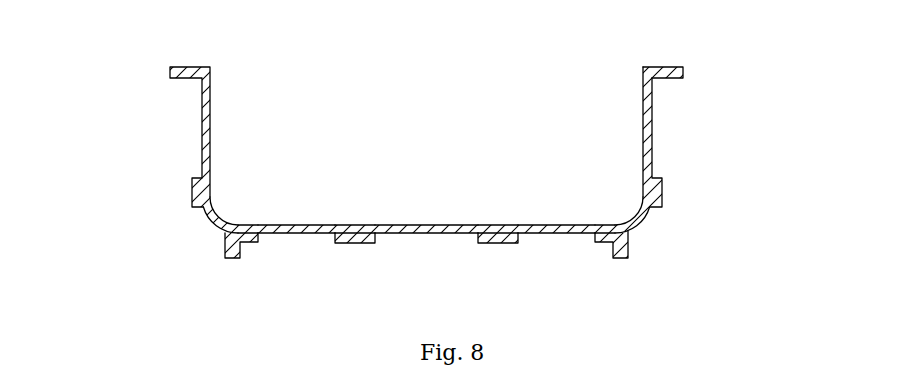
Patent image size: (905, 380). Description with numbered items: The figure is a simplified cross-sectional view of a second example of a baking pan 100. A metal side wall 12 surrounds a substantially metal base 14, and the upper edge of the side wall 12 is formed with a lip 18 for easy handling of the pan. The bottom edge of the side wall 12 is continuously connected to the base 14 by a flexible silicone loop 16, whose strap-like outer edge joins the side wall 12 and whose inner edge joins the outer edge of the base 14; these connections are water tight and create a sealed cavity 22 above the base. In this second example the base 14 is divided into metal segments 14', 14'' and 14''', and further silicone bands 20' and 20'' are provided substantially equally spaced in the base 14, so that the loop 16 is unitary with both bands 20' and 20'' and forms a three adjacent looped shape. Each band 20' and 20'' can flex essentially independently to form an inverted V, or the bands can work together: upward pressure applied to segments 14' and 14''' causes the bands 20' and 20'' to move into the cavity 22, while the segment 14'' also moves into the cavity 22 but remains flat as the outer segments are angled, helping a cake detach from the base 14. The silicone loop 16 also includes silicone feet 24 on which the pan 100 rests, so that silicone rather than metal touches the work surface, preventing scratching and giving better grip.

The baking pan 100 is at (765, 74).
The side wall 12 is at (650, 123).
The base 14 is at (129, 227).
The metal segment 14' is at (269, 269).
The metal segment 14'' is at (430, 266).
The metal segment 14''' is at (575, 265).
The silicone loop 16 is at (641, 222).
The lip 18 is at (660, 75).
The silicone band 20' is at (343, 265).
The silicone band 20'' is at (514, 260).
The cavity 22 is at (435, 102).
The feet 24 is at (623, 255).